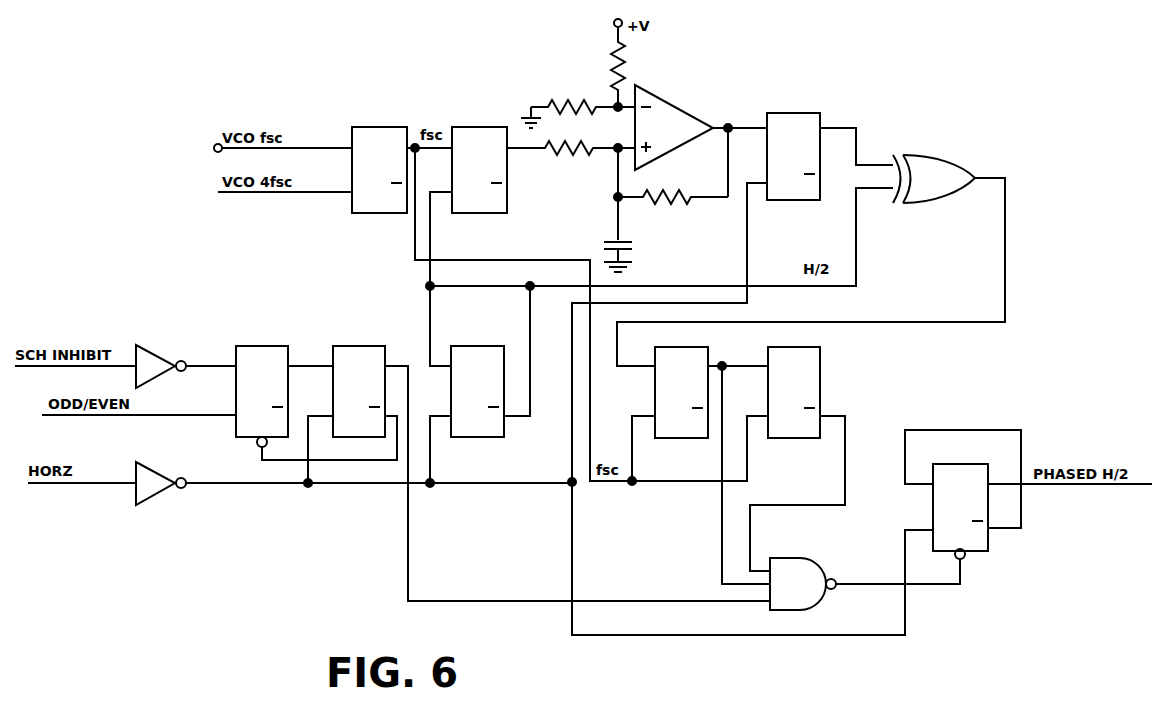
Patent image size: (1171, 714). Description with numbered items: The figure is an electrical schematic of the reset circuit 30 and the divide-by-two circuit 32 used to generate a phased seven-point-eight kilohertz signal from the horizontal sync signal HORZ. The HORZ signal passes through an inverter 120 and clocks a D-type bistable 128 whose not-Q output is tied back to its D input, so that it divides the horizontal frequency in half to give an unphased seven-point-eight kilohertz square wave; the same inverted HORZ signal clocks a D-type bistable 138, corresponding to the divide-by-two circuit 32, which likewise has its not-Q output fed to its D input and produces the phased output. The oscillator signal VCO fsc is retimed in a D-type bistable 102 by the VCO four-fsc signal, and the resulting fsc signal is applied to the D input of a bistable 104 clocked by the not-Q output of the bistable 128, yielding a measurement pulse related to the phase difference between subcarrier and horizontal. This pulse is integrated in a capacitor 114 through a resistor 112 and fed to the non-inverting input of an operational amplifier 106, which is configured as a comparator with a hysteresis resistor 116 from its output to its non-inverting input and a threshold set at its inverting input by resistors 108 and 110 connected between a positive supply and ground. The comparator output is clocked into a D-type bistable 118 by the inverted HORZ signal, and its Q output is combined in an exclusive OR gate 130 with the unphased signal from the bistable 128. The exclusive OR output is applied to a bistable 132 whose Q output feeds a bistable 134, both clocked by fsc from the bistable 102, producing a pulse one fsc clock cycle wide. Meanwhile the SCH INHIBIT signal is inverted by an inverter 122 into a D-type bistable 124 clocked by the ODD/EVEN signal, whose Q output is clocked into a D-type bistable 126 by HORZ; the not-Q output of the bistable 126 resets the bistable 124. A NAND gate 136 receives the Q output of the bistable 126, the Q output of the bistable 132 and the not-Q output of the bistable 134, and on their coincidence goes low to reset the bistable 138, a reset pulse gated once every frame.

The reset circuit 30 is at (397, 542).
The divide-by-2 circuit 32 is at (921, 593).
The D-type bistable 102 is at (372, 213).
The bistable 104 is at (480, 213).
The operational amplifier 106 is at (665, 97).
The resistor 108 is at (562, 97).
The resistor 110 is at (627, 60).
The resistor 112 is at (592, 155).
The capacitor 114 is at (631, 241).
The hysteresis resistor 116 is at (673, 186).
The D-type bistable 118 is at (805, 113).
The inverter 120 is at (152, 497).
The inverter 122 is at (151, 356).
The D-type bistable 124 is at (260, 345).
The D-type bistable 126 is at (365, 346).
The D-type bistable 128 is at (470, 437).
The exclusive OR gate 130 is at (938, 196).
The bistable 132 is at (673, 347).
The D-type bistable 134 is at (800, 347).
The NAND gate 136 is at (808, 568).
The D-type bistable 138 is at (978, 553).